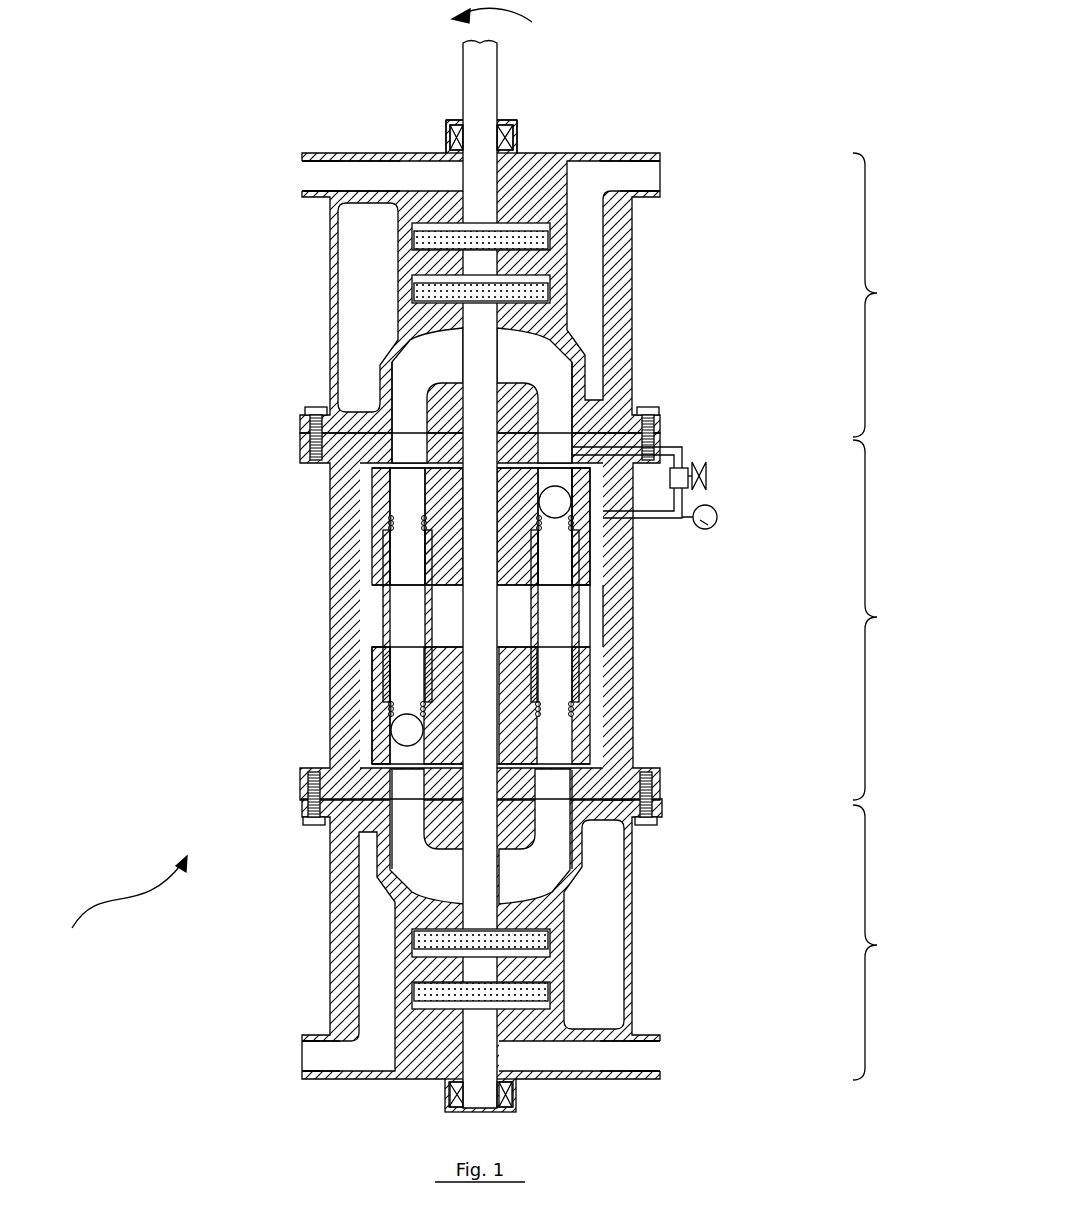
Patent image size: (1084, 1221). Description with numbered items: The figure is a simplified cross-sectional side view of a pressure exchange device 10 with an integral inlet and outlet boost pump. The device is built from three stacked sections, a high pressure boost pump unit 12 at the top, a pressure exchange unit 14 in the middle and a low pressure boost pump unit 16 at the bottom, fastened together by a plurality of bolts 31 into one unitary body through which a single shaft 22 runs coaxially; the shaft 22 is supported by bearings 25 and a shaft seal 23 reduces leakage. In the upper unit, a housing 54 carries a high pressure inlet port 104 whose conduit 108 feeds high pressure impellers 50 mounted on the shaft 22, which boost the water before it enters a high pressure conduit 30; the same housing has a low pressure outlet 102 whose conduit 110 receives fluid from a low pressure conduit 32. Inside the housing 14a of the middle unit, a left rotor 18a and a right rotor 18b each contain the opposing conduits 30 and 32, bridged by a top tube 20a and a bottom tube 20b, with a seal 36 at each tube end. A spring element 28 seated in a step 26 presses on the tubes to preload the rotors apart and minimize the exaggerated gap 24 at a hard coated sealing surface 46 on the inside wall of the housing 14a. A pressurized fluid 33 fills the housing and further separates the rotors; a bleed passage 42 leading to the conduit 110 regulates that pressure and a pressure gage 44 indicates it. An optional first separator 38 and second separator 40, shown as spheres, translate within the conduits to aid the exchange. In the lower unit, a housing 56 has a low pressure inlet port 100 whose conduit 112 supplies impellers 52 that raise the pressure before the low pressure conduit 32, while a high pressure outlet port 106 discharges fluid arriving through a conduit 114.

The pressure exchange device 10 is at (117, 908).
The high pressure boost pump unit 12 is at (882, 295).
The pressure exchange unit 14 is at (882, 620).
The housing 14a is at (330, 658).
The low pressure boost pump unit 16 is at (882, 942).
The left rotor 18a is at (372, 568).
The right rotor 18b is at (372, 728).
The top tube 20a is at (380, 621).
The bottom tube 20b is at (585, 605).
The shaft 22 is at (503, 78).
The shaft seal 23 is at (453, 148).
The gap 24 is at (403, 463).
The bearings 25 is at (512, 133).
The step 26 is at (580, 522).
The spring element 28 is at (578, 711).
The high pressure conduit 30 is at (407, 526).
The bolts 31 is at (303, 403).
The low pressure conduit 32 is at (555, 526).
The pressurized fluid 33 is at (593, 628).
The seal 36 is at (578, 557).
The first separator 38 is at (403, 738).
The second separator 40 is at (560, 503).
The bleed passage 42 is at (705, 474).
The pressure gage 44 is at (715, 510).
The sealing surface 46 is at (610, 440).
The high pressure impellers 50 is at (555, 238).
The impellers 52 is at (555, 945).
The housing 54 is at (330, 277).
The housing 56 is at (330, 975).
The low pressure inlet port 100 is at (717, 1057).
The low pressure outlet 102 is at (717, 177).
The high pressure inlet port 104 is at (248, 176).
The high pressure outlet port 106 is at (238, 1057).
The conduit 108 is at (377, 177).
The conduit 110 is at (635, 183).
The conduit 112 is at (617, 1058).
The conduit 114 is at (337, 1052).